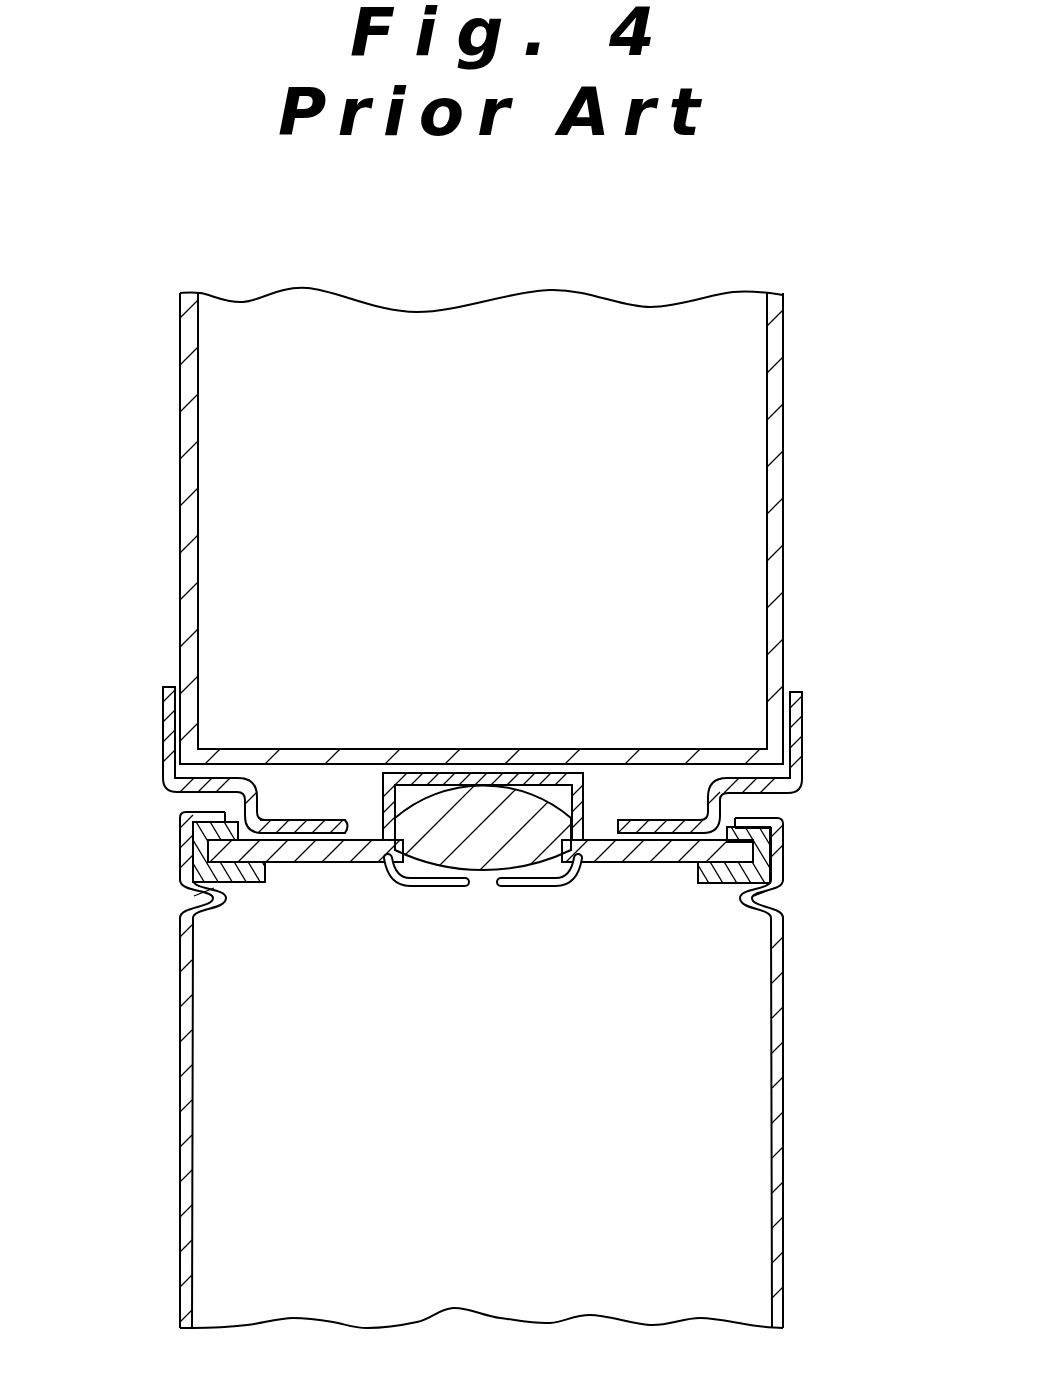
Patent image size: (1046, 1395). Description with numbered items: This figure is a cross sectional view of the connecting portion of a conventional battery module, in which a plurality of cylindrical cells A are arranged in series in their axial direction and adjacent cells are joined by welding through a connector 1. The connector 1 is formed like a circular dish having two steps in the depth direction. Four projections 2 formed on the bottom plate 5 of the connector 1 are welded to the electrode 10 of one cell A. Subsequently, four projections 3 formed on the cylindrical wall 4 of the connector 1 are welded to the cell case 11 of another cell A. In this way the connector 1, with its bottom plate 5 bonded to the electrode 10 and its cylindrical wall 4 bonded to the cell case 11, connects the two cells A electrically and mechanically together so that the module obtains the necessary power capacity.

The connector 1 is at (798, 775).
The projections 2 is at (187, 860).
The projections 3 is at (163, 714).
The cylindrical wall 4 is at (805, 694).
The bottom plate 5 is at (322, 822).
The electrode 10 is at (623, 865).
The cell case 11 is at (188, 512).
The cell A is at (485, 808).